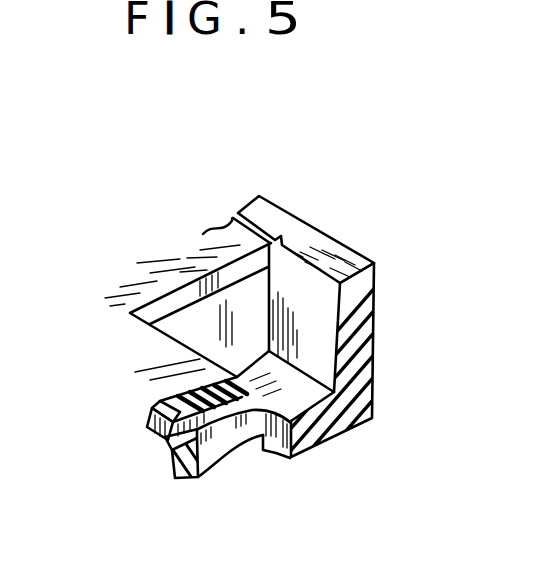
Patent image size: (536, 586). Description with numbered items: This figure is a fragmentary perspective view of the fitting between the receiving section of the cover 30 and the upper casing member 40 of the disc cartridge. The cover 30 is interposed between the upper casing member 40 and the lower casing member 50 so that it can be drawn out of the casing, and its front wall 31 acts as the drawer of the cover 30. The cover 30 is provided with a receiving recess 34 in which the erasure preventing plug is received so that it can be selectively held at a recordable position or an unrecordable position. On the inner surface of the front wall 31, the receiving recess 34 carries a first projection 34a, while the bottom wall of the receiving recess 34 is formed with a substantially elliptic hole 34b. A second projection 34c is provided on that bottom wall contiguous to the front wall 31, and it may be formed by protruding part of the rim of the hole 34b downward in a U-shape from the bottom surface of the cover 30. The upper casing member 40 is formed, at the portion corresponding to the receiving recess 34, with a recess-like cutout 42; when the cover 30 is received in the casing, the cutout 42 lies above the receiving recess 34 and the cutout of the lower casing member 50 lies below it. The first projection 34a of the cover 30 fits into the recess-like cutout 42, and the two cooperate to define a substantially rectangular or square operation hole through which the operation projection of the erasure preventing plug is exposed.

The cover 30 is at (305, 203).
The front wall 31 is at (259, 195).
The receiving recess 34 is at (297, 386).
The first projection 34a is at (311, 285).
The hole 34b is at (216, 442).
The second projection 34c is at (273, 452).
The upper casing member 40 is at (166, 258).
The recess-like cutout 42 is at (173, 342).
The lower casing member 50 is at (241, 475).